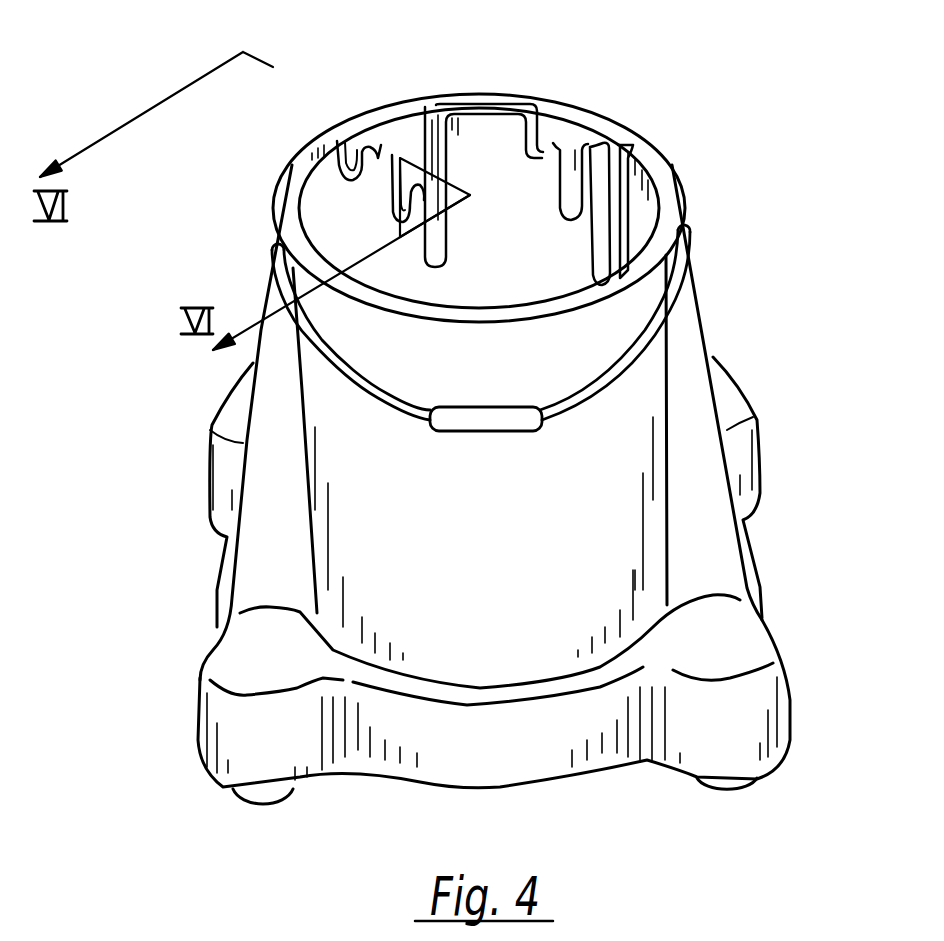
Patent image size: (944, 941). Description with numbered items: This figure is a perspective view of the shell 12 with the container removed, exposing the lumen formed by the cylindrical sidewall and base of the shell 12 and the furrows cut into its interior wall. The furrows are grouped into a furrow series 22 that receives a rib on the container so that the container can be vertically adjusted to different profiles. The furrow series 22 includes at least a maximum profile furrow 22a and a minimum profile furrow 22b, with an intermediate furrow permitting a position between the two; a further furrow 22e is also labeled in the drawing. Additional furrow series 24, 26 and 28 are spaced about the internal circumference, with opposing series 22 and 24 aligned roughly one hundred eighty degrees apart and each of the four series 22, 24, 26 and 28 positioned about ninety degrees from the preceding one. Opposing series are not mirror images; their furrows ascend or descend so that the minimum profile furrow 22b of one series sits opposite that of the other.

The shell 12 is at (527, 416).
The furrow series 22 is at (479, 176).
The maximum profile furrow 22a is at (352, 140).
The hook slot 22e is at (398, 158).
The minimum profile furrow 22b is at (428, 118).
The furrow series 24 is at (708, 327).
The furrow series 26 is at (606, 120).
The furrow series 28 is at (270, 233).